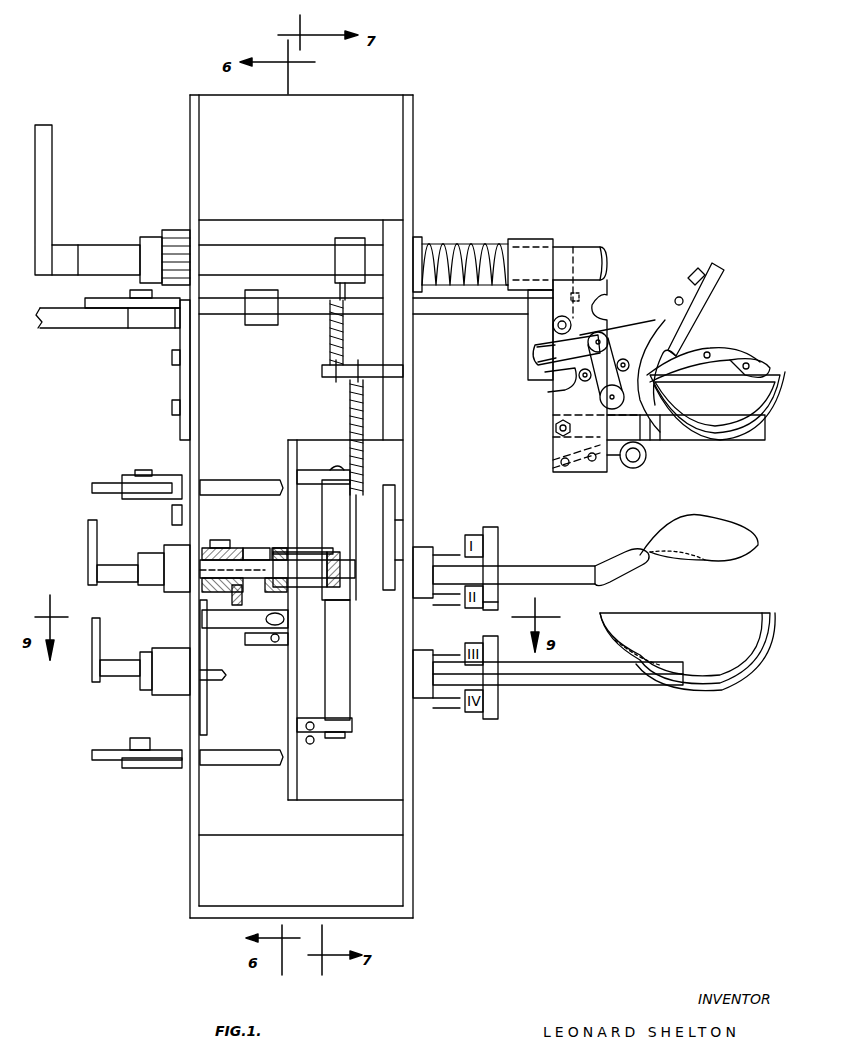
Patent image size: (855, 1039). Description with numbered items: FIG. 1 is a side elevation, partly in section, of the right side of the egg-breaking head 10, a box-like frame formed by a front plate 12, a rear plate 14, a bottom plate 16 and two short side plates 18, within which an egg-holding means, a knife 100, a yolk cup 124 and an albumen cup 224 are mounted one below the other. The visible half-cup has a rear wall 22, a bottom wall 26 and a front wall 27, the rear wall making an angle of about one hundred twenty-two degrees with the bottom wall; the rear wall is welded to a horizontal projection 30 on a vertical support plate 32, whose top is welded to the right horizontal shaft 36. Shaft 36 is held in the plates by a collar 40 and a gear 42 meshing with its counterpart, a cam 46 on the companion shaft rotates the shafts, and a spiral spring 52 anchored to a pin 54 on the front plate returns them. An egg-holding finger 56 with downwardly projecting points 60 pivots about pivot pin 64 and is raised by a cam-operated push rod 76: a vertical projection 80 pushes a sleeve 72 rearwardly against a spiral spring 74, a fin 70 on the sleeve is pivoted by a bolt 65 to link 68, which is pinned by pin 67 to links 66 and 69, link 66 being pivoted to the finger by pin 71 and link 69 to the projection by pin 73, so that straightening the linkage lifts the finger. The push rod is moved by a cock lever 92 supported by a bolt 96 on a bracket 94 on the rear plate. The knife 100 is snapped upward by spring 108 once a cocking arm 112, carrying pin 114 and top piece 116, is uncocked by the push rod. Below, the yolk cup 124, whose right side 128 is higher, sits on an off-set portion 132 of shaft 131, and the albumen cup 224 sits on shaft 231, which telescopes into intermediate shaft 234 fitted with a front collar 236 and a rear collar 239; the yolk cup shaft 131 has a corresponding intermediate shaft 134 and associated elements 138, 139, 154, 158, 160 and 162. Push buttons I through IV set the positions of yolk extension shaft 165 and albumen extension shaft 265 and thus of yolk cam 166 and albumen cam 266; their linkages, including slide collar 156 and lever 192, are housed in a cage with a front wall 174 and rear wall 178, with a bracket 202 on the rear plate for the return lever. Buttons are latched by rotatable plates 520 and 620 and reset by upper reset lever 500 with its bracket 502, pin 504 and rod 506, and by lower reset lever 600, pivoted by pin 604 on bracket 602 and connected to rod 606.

The breaking head 10 is at (428, 120).
The front plate 12 is at (413, 155).
The rear plate 14 is at (190, 120).
The bottom plate 16 is at (233, 918).
The side plates 18 is at (355, 95).
The rear wall 22 is at (650, 400).
The bottom wall 26 is at (745, 440).
The front wall 27 is at (760, 403).
The horizontal projection 30 is at (645, 420).
The vertical support plate 32 is at (560, 473).
The right horizontal shaft 36 is at (590, 255).
The collar 40 is at (417, 237).
The gears 42 is at (175, 230).
The cam 46 is at (80, 207).
The spiral spring 52 is at (330, 346).
The pin 54 is at (322, 372).
The egg-holding finger 56 is at (700, 350).
The points 60 is at (745, 360).
The pivot pin 64 is at (545, 388).
The bolt 65 is at (535, 360).
The link 66 is at (618, 348).
The pin 67 is at (607, 333).
The link 68 is at (580, 378).
The link 69 is at (600, 393).
The fin 70 is at (528, 338).
The pin 71 is at (628, 365).
The sleeve 72 is at (530, 239).
The pin 73 is at (662, 372).
The spiral spring 74 is at (468, 240).
The push rod 76 is at (232, 325).
The vertical projection 80 is at (565, 245).
The cock lever 92 is at (70, 328).
The bracket 94 is at (172, 345).
The bolt 96 is at (132, 345).
The knife 100 is at (738, 455).
The spring 108 is at (627, 468).
The cocking arm 112 is at (718, 258).
The pin 114 is at (690, 300).
The top piece 116 is at (690, 265).
The yolk cup 124 is at (775, 548).
The right side 128 is at (705, 518).
The yolk cup shaft 131 is at (555, 585).
The off-set portion 132 is at (628, 572).
The intermediate shaft 134 is at (150, 585).
The wing 138 is at (415, 545).
The rear collar 139 is at (176, 545).
The spiral spring 154 is at (350, 405).
The slide collar 156 is at (215, 548).
The flange 158 is at (250, 546).
The shaft 160 is at (305, 558).
The collar 162 is at (258, 550).
The yolk extension shaft 165 is at (114, 563).
The yolk cam 166 is at (78, 572).
The front wall 174 is at (400, 438).
The rear wall 178 is at (298, 440).
The lever 192 is at (236, 540).
The bracket 202 is at (207, 730).
The albumen cup 224 is at (742, 676).
The albumen cup shaft 231 is at (582, 688).
The intermediate shaft 234 is at (145, 688).
The front collar 236 is at (425, 700).
The rear collar 239 is at (178, 648).
The albumen extension shaft 265 is at (119, 662).
The albumen cam 266 is at (85, 680).
The upper reset lever 500 is at (92, 486).
The bracket 502 is at (120, 495).
The pin 504 is at (145, 470).
The rod 506 is at (237, 485).
The rotatable plate 520 is at (325, 505).
The lower reset lever 600 is at (92, 755).
The bracket 602 is at (125, 768).
The pin 604 is at (144, 738).
The rod 606 is at (215, 755).
The block 620 is at (325, 650).